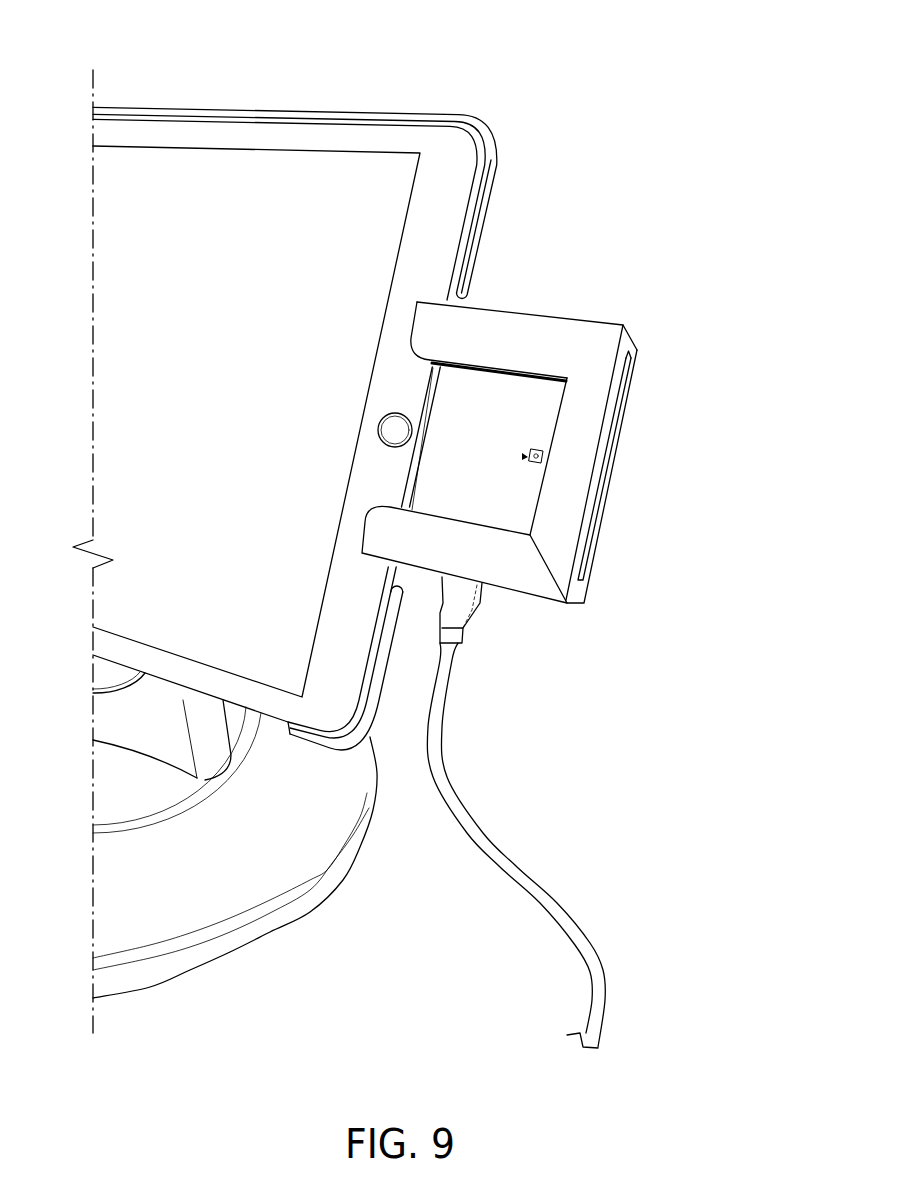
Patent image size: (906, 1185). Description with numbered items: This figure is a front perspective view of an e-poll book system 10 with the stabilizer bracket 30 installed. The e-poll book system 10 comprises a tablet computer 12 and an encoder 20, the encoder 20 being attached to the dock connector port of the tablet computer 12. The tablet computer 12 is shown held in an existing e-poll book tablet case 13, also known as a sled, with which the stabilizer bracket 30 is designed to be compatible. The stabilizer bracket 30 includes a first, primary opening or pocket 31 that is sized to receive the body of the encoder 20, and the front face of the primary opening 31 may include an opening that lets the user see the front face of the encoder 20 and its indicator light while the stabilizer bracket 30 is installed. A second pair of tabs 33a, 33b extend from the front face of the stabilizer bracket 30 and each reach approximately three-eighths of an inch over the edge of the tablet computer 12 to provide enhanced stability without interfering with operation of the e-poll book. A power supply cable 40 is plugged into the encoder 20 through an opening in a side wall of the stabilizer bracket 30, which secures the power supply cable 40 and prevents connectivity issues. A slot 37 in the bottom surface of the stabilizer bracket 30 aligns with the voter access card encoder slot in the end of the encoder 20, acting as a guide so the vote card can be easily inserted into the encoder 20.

The e-poll book system 10 is at (453, 77).
The tablet computer 12 is at (333, 147).
The e-poll book tablet case 13 is at (230, 113).
The encoder 20 is at (500, 405).
The stabilizer bracket 30 is at (653, 392).
The primary opening 31 is at (512, 502).
The second tab 33a is at (387, 520).
The second tab 33b is at (427, 320).
The slot 37 is at (598, 487).
The power supply cable 40 is at (543, 898).